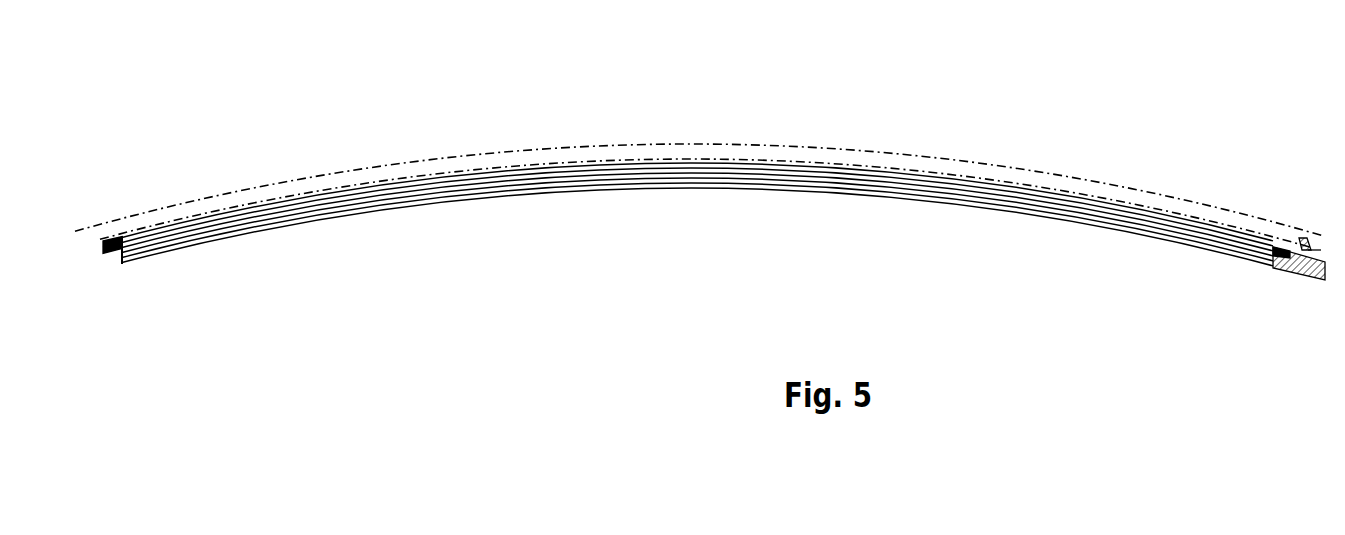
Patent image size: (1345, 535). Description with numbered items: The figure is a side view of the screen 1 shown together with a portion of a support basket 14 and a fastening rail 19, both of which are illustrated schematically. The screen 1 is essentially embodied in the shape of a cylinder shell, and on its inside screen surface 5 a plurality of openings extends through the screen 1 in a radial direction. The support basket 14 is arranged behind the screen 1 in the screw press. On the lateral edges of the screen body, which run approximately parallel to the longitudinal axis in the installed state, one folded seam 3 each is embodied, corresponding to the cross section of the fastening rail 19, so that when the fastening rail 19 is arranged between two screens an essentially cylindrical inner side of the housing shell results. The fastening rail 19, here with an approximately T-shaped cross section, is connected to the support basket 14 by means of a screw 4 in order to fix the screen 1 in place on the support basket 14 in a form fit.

The screen 1 is at (703, 294).
The folded seam 3 is at (116, 262).
The screw 4 is at (1299, 283).
The screen surface 5 is at (570, 190).
The support basket 14 is at (722, 147).
The fastening rail 19 is at (1285, 262).